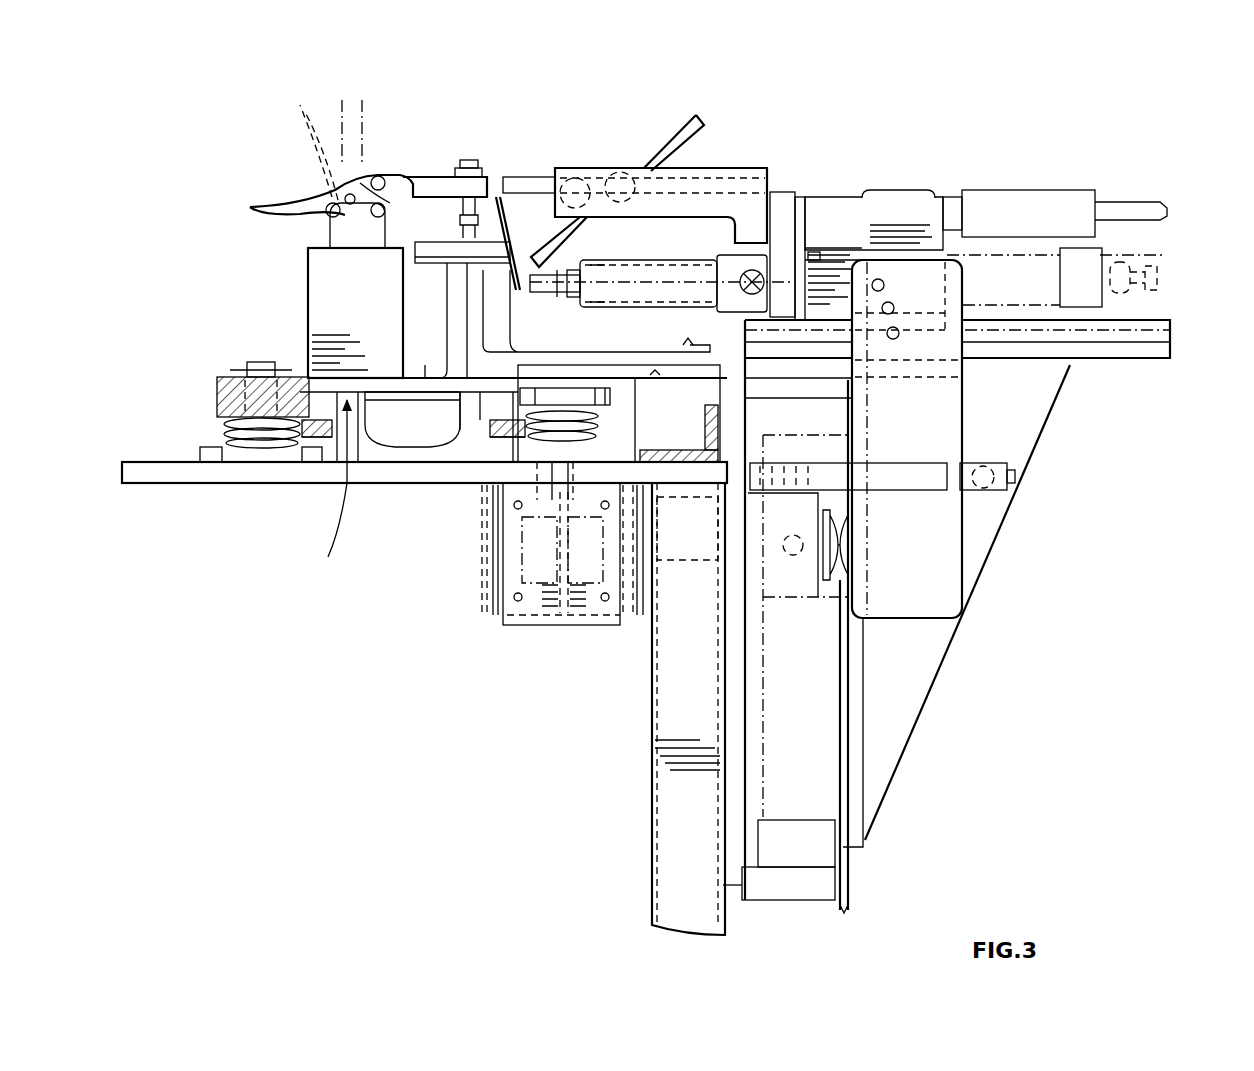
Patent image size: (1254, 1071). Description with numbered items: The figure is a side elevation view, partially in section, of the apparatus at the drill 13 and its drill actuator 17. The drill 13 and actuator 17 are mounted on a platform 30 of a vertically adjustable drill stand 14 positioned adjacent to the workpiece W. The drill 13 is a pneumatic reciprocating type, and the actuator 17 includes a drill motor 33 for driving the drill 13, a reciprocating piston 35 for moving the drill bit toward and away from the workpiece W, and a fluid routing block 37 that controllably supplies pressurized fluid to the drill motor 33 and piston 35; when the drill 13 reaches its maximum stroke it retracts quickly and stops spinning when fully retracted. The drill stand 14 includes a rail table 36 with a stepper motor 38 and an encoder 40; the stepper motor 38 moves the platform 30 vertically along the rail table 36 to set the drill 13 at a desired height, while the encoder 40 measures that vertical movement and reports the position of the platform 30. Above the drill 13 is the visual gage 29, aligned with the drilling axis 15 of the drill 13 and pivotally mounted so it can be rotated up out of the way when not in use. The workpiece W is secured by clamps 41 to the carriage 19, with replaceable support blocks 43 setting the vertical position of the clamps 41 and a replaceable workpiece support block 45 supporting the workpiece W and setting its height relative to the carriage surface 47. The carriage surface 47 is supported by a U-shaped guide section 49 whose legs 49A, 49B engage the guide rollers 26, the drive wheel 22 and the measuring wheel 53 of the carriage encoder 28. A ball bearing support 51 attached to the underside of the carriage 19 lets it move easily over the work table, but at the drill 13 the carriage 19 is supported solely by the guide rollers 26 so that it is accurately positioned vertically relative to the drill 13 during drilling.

The drill 13 is at (690, 262).
The drill stand 14 is at (932, 521).
The drilling axis 15 is at (627, 280).
The drill actuator 17 is at (905, 200).
The carriage 19 is at (348, 385).
The drive wheel 22 is at (222, 430).
The guide rollers 26 is at (520, 447).
The carriage encoder 28 is at (520, 610).
The visual gage 29 is at (663, 150).
The platform 30 is at (1140, 348).
The drill motor 33 is at (833, 262).
The reciprocating piston 35 is at (1045, 200).
The rail table 36 is at (806, 728).
The fluid routing block 37 is at (1095, 268).
The stepper motor 38 is at (822, 858).
The encoder 40 is at (785, 887).
The clamps 41 is at (443, 178).
The support blocks 43 is at (330, 272).
The workpiece support block 45 is at (467, 288).
The carriage surface 47 is at (432, 372).
The guide section 49 is at (328, 492).
The leg 49A is at (320, 483).
The leg 49B is at (488, 448).
The ball bearing support 51 is at (400, 448).
The measuring wheel 53 is at (612, 392).
The workpiece W is at (497, 187).